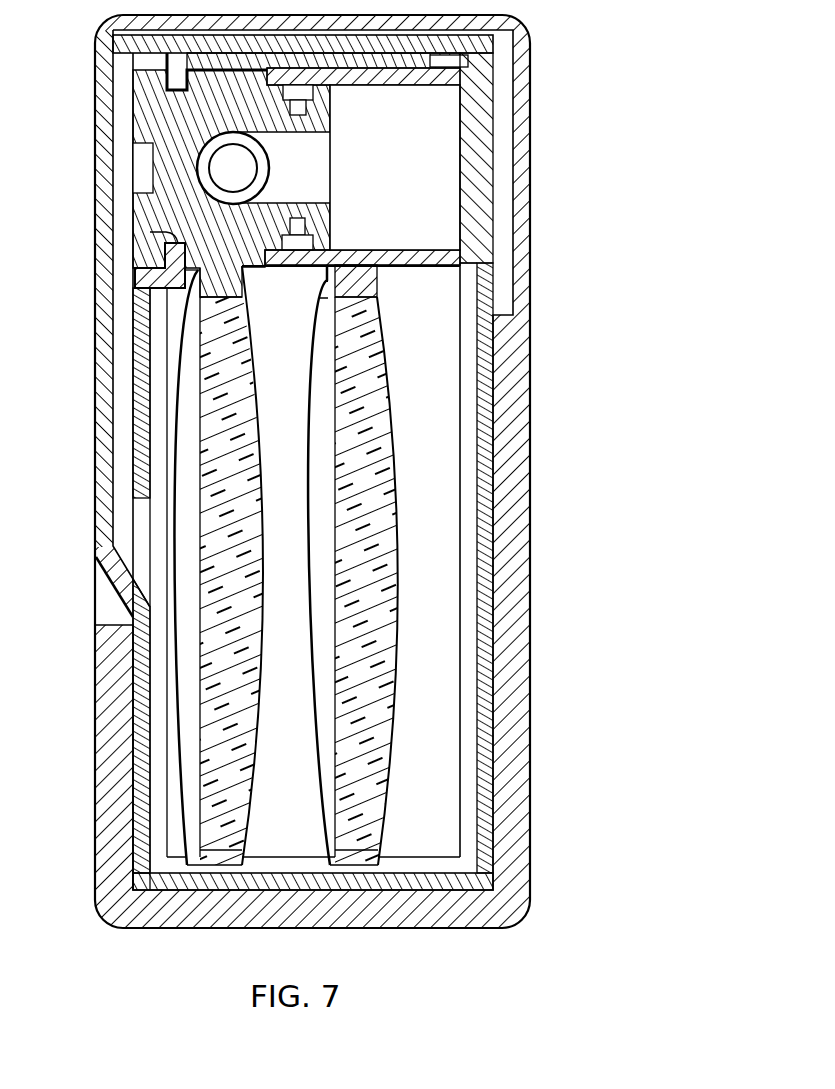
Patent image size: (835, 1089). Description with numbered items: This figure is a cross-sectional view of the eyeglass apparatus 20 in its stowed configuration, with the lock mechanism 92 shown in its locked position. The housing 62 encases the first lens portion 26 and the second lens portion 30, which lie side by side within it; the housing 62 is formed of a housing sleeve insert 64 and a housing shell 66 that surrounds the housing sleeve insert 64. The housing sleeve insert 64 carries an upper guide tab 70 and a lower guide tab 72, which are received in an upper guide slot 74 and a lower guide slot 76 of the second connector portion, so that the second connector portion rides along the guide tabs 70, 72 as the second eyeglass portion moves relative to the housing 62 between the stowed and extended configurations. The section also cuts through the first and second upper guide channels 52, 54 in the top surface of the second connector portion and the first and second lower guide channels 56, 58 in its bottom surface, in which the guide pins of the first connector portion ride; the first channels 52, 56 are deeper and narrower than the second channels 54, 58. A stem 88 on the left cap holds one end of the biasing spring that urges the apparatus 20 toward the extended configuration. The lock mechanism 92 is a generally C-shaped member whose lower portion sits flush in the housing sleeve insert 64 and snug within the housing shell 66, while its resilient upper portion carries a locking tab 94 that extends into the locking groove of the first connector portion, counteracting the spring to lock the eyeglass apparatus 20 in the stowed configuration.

The eyeglass apparatus 20 is at (393, 471).
The first lens portion 26 is at (398, 425).
The second lens portion 30 is at (200, 476).
The first upper guide channel 52 is at (306, 110).
The second upper guide channel 54 is at (312, 97).
The first lower guide channel 56 is at (305, 226).
The second lower guide channel 58 is at (312, 252).
The housing 62 is at (323, 471).
The housing sleeve insert 64 is at (136, 345).
The housing shell 66 is at (497, 752).
The upper guide tab 70 is at (170, 85).
The lower guide tab 72 is at (160, 276).
The upper guide slot 74 is at (177, 100).
The lower guide slot 76 is at (160, 232).
The stem 88 is at (205, 168).
The lock mechanism 92 is at (92, 386).
The locking tab 94 is at (470, 175).